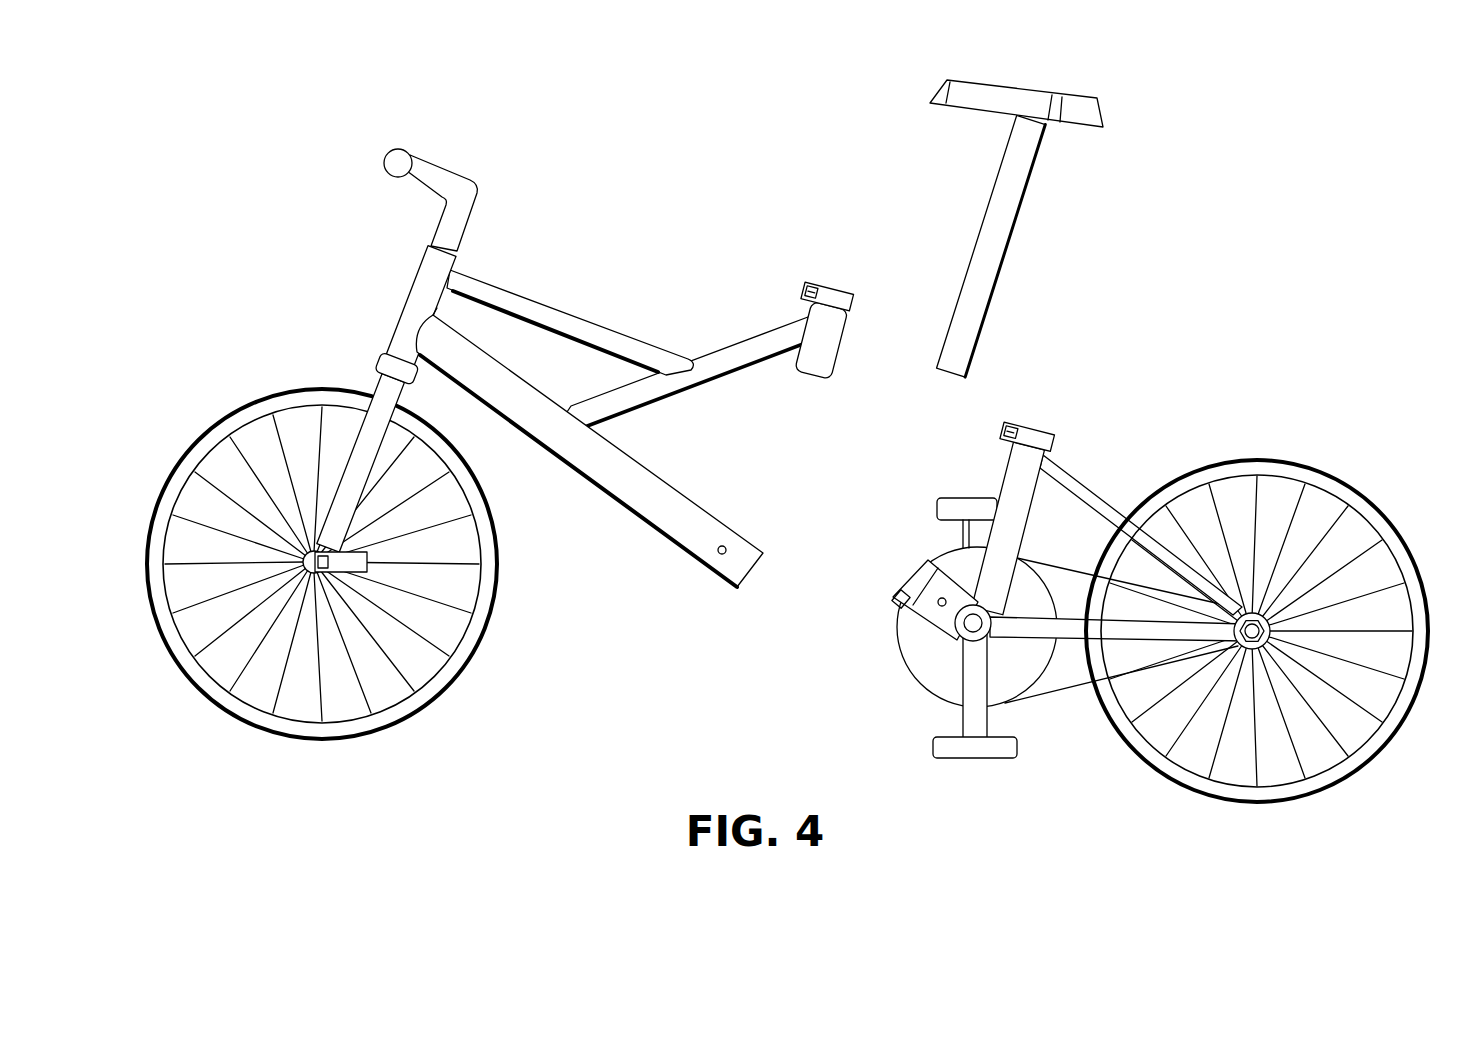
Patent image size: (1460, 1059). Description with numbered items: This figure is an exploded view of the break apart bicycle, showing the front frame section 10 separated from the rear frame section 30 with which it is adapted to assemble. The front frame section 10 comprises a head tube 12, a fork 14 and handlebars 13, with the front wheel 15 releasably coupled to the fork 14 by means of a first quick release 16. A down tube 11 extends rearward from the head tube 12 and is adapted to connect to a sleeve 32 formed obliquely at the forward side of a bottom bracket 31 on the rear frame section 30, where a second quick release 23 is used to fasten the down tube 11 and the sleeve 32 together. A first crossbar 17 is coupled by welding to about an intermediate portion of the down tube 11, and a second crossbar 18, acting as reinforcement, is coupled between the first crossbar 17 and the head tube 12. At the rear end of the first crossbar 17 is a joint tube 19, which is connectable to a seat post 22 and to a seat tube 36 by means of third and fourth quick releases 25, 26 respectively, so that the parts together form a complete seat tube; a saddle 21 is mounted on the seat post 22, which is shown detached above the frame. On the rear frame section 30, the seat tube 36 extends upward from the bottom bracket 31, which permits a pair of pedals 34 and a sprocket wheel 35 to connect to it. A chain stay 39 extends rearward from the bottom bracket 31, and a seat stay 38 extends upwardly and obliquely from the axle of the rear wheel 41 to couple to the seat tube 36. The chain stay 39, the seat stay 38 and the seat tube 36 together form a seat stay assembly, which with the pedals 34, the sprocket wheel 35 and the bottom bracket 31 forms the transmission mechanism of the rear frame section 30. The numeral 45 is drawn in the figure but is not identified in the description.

The front frame section 10 is at (413, 267).
The down tube 11 is at (553, 443).
The head tube 12 is at (405, 308).
The handlebars 13 is at (398, 163).
The fork 14 is at (383, 385).
The front wheel 15 is at (212, 433).
The first quick release 16 is at (360, 563).
The first crossbar 17 is at (743, 343).
The second crossbar 18 is at (570, 320).
The joint tube 19 is at (835, 345).
The saddle 21 is at (1090, 110).
The seat post 22 is at (1015, 158).
The second quick release 23 is at (905, 580).
The third quick release 25 is at (840, 292).
The fourth quick release 26 is at (1045, 428).
The rear frame section 30 is at (1317, 443).
The bottom bracket 31 is at (963, 633).
The sleeve 32 is at (958, 630).
The pedals 34 is at (967, 748).
The sprocket wheel 35 is at (1027, 693).
The seat tube 36 is at (1010, 480).
The seat stay 38 is at (1100, 498).
The chain stay 39 is at (1110, 640).
The rear wheel 41 is at (1368, 510).
The crank hole 45 is at (937, 604).